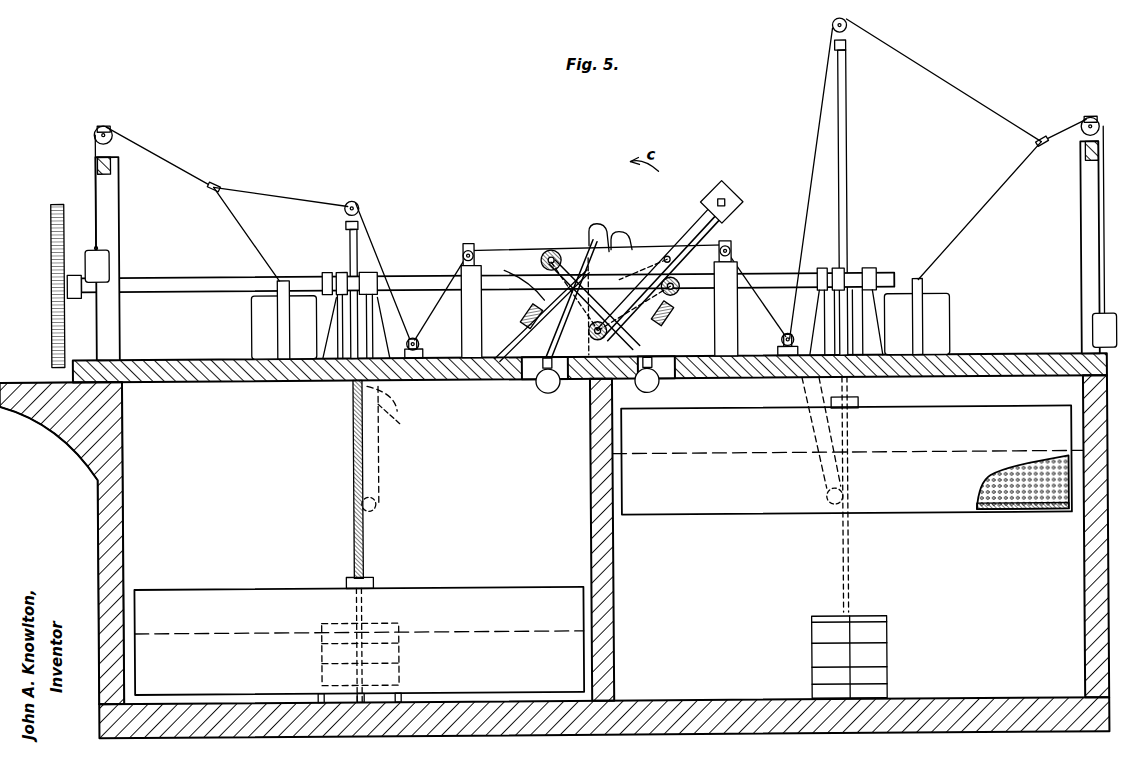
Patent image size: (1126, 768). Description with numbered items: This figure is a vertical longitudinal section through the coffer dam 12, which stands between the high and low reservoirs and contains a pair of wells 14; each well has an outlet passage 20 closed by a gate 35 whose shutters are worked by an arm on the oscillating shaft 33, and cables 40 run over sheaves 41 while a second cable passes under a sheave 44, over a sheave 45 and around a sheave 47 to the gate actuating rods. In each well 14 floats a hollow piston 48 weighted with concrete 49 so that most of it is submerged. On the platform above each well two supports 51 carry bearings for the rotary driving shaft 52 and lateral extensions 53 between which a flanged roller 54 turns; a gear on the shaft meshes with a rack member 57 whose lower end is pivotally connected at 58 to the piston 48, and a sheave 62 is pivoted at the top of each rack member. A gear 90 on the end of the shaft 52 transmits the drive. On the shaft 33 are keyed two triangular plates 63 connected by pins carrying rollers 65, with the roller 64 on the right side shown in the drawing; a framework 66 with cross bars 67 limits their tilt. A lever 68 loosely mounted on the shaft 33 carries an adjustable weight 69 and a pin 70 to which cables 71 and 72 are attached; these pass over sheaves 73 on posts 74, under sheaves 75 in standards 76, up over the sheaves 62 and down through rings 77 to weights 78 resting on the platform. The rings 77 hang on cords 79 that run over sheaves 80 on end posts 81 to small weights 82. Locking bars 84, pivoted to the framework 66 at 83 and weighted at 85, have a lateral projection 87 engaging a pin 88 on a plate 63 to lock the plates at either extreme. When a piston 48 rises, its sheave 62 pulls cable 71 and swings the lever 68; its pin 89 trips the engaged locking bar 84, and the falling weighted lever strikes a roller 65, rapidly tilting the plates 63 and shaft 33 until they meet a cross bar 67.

The coffer dam 12 is at (612, 727).
The wells 14 is at (137, 470).
The outlet passage 20 is at (320, 692).
The oscillating shaft 33 is at (576, 382).
The gate 35 is at (392, 672).
The cables 40 is at (380, 470).
The sheaves 41 is at (398, 415).
The sheave 44 is at (376, 503).
The sheave 45 is at (798, 382).
The sheave 47 is at (578, 408).
The piston 48 is at (436, 590).
The concrete 49 is at (1012, 503).
The supports 51 is at (318, 385).
The rotary driving shaft 52 is at (186, 290).
The lateral extensions 53 is at (322, 274).
The flanged roller 54 is at (850, 278).
The rack member 57 is at (363, 536).
The pivotal connection 58 is at (372, 578).
The sheave 62 is at (345, 212).
The triangular plates 63 is at (568, 250).
The roller 64 is at (558, 250).
The rollers 65 is at (545, 255).
The framework 66 is at (525, 340).
The cross bars 67 is at (522, 311).
The lever 68 is at (698, 222).
The weight 69 is at (729, 184).
The pin 70 is at (690, 232).
The cable 71 is at (287, 193).
The cable 72 is at (946, 86).
The sheaves 73 is at (463, 252).
The posts 74 is at (462, 332).
The sheaves 75 is at (411, 337).
The standards 76 is at (748, 378).
The rings 77 is at (217, 183).
The weights 78 is at (252, 322).
The cords 79 is at (96, 188).
The sheaves 80 is at (97, 136).
The posts 81 is at (115, 212).
The small weights 82 is at (110, 262).
The pivot 83 is at (660, 343).
The locking bars 84 is at (608, 232).
The weights 85 is at (542, 392).
The lateral projection 87 is at (524, 278).
The pin 88 is at (611, 306).
The pin 89 is at (672, 262).
The gear 90 is at (52, 326).